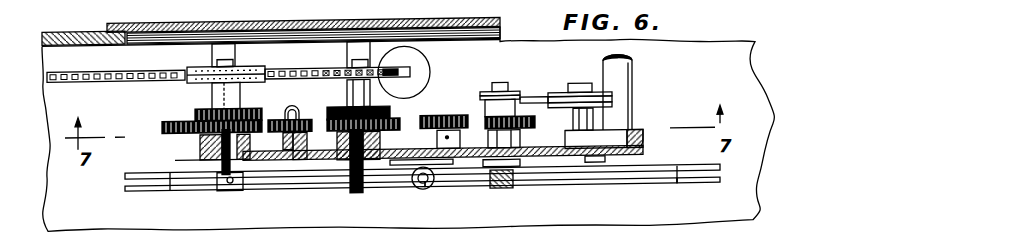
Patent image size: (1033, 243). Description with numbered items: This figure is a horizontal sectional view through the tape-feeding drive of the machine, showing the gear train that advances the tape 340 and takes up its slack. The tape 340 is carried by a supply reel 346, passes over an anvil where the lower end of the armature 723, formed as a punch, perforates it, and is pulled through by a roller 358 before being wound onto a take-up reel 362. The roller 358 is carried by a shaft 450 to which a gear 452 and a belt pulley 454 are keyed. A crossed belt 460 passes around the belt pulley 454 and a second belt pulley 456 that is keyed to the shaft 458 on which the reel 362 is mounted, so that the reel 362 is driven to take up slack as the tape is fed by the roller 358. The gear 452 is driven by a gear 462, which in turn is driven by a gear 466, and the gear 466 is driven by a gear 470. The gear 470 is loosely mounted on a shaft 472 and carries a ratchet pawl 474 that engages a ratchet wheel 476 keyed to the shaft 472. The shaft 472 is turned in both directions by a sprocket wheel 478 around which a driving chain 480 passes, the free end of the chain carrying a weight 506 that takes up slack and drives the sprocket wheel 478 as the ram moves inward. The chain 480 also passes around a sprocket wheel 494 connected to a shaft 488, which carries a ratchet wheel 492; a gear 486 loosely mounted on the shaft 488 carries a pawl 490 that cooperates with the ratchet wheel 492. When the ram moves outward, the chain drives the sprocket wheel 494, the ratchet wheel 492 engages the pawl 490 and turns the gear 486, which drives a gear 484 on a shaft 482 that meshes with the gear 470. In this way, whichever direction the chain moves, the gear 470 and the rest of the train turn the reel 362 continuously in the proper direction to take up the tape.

The driving chain 480 is at (108, 74).
The sprocket wheel 494 is at (195, 74).
The ratchet wheel 492 is at (252, 114).
The sprocket wheel 478 is at (348, 78).
The weight 506 is at (422, 62).
The pawl 490 is at (212, 110).
The gear 486 is at (162, 138).
The shaft 488 is at (223, 195).
The gear 484 is at (276, 124).
The shaft 482 is at (290, 164).
The ratchet pawl 474 is at (342, 115).
The shaft 472 is at (357, 193).
The gear 470 is at (332, 160).
The ratchet wheel 476 is at (392, 118).
The gear 462 is at (437, 140).
The gear 466 is at (468, 119).
The belt pulley 454 is at (490, 97).
The gear 452 is at (530, 105).
The crossed belt 460 is at (547, 105).
The belt pulley 456 is at (620, 98).
The shaft 458 is at (592, 128).
The armature 723 is at (417, 196).
The shaft 450 is at (503, 197).
The tape 340 is at (462, 189).
The reel 346 is at (185, 196).
The roller 358 is at (513, 196).
The reel 362 is at (697, 192).